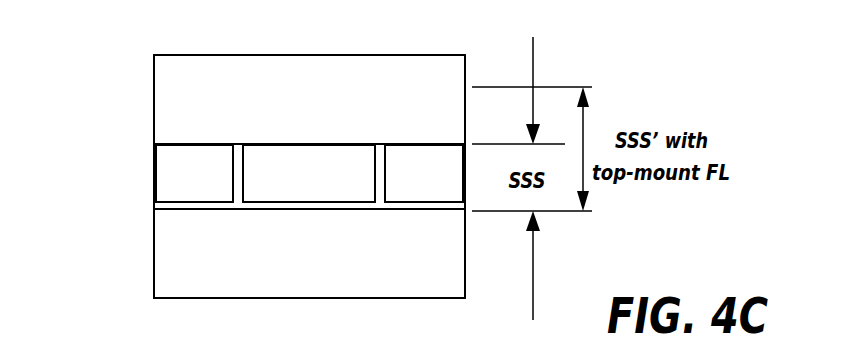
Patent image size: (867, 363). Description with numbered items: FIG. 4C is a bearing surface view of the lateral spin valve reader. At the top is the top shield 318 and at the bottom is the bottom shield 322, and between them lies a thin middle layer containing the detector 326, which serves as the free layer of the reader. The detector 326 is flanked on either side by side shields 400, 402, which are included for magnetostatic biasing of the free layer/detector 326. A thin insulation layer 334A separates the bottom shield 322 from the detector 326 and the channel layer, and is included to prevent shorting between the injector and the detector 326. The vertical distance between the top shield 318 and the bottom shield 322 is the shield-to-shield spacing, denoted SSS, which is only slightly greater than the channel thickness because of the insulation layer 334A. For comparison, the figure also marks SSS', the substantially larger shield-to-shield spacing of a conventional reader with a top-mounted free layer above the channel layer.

The top shield 318 is at (290, 126).
The bottom shield 322 is at (291, 280).
The side shield 400 is at (172, 191).
The side shield 402 is at (403, 191).
The detector 326 is at (290, 191).
The insulation layer 334A is at (155, 204).